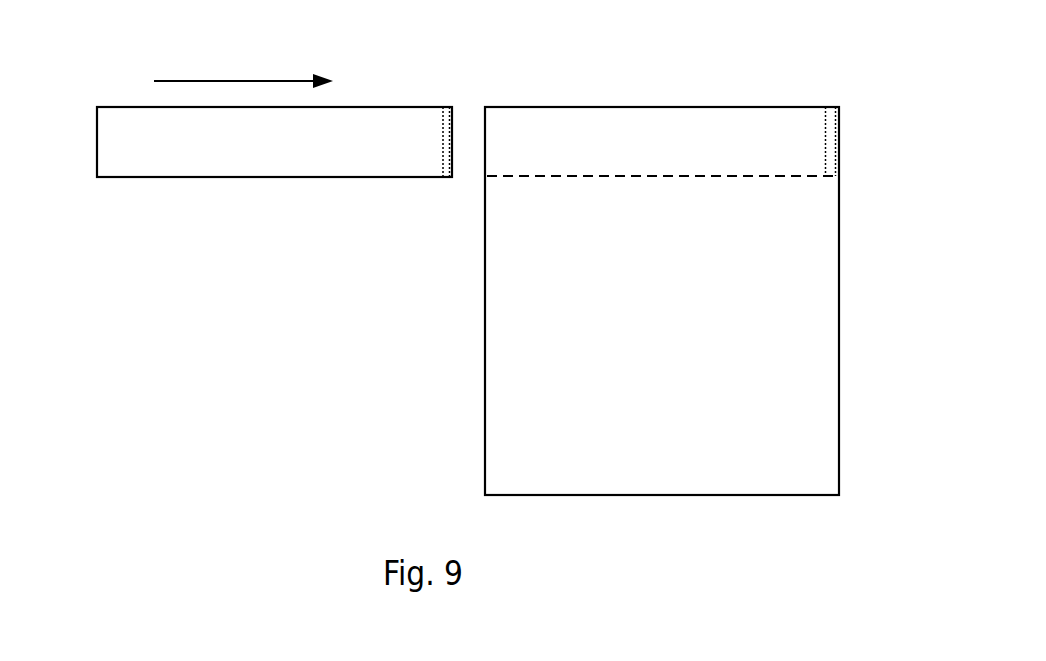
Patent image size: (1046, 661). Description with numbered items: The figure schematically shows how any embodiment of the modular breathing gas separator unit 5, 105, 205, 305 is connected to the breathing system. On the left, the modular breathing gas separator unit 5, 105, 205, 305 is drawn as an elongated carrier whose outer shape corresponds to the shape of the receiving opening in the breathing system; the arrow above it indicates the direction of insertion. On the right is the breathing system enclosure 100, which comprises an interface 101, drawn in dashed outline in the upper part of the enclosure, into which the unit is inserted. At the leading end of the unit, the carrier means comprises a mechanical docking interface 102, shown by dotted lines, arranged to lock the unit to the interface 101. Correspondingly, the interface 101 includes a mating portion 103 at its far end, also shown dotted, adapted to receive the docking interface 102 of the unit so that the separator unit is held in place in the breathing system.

The modular breathing gas separator unit 5 is at (240, 177).
The modular breathing gas separator unit 105 is at (274, 142).
The modular breathing gas separator unit 205 is at (274, 142).
The modular breathing gas separator unit 305 is at (274, 142).
The mechanical docking interface 102 is at (443, 177).
The breathing system enclosure 100 is at (580, 70).
The interface 101 is at (700, 130).
The mating portion 103 is at (838, 153).